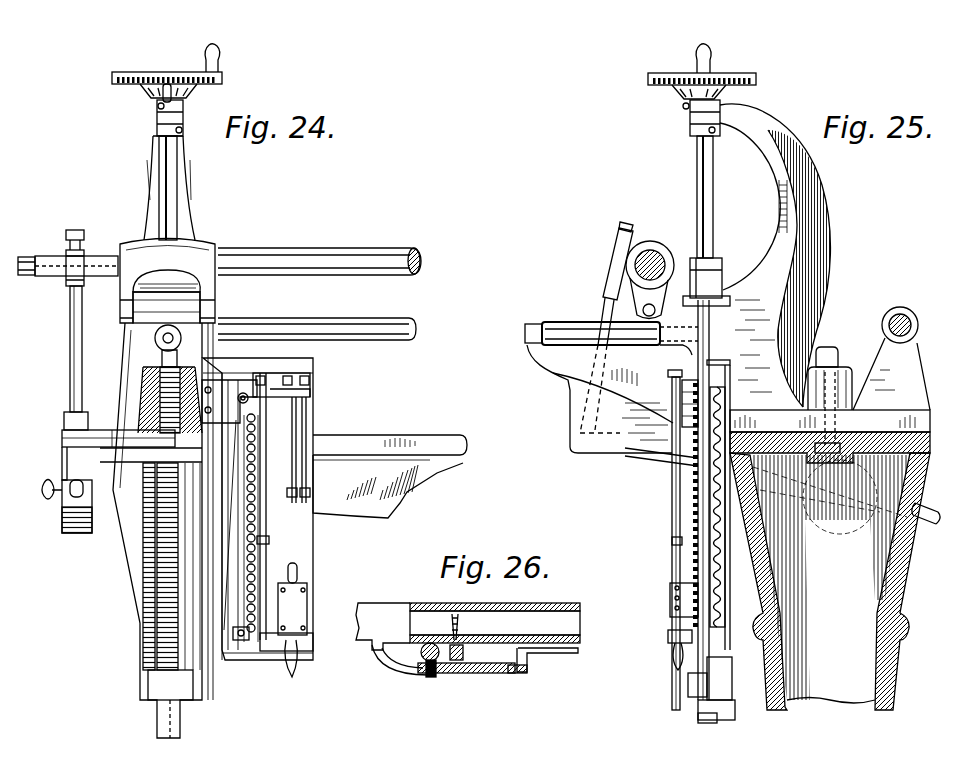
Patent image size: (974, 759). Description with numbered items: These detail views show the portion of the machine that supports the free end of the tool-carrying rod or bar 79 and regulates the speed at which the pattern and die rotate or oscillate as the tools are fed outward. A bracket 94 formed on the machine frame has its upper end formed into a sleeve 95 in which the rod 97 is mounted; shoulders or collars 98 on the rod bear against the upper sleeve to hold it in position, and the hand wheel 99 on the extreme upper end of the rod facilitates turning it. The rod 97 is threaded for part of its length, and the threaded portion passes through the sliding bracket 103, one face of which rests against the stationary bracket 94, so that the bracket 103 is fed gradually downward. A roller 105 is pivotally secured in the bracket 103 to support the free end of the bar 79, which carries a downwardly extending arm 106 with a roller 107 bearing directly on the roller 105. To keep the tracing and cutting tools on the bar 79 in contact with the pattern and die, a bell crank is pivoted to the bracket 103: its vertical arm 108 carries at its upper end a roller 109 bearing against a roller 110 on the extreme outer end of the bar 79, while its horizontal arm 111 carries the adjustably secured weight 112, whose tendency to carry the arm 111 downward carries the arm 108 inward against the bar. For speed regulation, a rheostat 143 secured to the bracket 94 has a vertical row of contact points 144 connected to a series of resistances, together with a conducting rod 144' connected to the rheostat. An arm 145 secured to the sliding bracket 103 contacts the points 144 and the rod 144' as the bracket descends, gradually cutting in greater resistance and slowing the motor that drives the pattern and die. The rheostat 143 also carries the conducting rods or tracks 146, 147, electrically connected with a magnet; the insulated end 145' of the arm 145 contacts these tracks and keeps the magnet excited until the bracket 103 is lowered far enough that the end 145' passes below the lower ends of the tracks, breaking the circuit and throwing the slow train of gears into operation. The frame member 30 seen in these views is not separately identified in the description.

In FIG. 24, the base 30 is at (362, 516).
In FIG. 25, the base 30 is at (753, 540).
In FIG. 24, the rod or bar 79 is at (350, 251).
In FIG. 25, the rod or bar 79 is at (653, 256).
In FIG. 24, the bracket 94 is at (190, 225).
In FIG. 25, the bracket 94 is at (829, 264).
In FIG. 24, the sleeve 95 is at (183, 116).
In FIG. 25, the sleeve 95 is at (690, 126).
In FIG. 24, the rod 97 is at (165, 179).
In FIG. 25, the rod 97 is at (702, 172).
In FIG. 24, the shoulders or collars 98 is at (158, 104).
In FIG. 25, the shoulders or collars 98 is at (683, 103).
In FIG. 24, the hand wheel 99 is at (222, 81).
In FIG. 25, the hand wheel 99 is at (757, 80).
In FIG. 24, the sliding bracket 103 is at (150, 437).
In FIG. 25, the sliding bracket 103 is at (570, 402).
In FIG. 24, the roller 105 is at (182, 337).
In FIG. 25, the roller 105 is at (550, 326).
In FIG. 25, the arm 106 is at (667, 288).
In FIG. 24, the roller 107 is at (201, 302).
In FIG. 25, the roller 107 is at (683, 298).
In FIG. 24, the vertical arm 108 is at (72, 374).
In FIG. 25, the vertical arm 108 is at (605, 306).
In FIG. 24, the roller 109 is at (68, 287).
In FIG. 25, the roller 109 is at (616, 244).
In FIG. 24, the roller 110 is at (46, 254).
In FIG. 24, the horizontal arm 111 is at (68, 474).
In FIG. 25, the horizontal arm 111 is at (645, 460).
In FIG. 24, the weight 112 is at (72, 538).
In FIG. 24, the rheostat 143 is at (312, 412).
In FIG. 24, the contact points 144 is at (301, 507).
In FIG. 25, the contact points 144 is at (685, 511).
In FIG. 24, the conducting rod 144' is at (229, 660).
In FIG. 26, the conducting rod 144' is at (466, 674).
In FIG. 24, the arm 145 is at (236, 382).
In FIG. 26, the arm 145 is at (400, 668).
In FIG. 24, the insulated end 145' is at (312, 382).
In FIG. 24, the conducting rod or track 146 is at (292, 502).
In FIG. 24, the conducting rod or track 147 is at (304, 503).